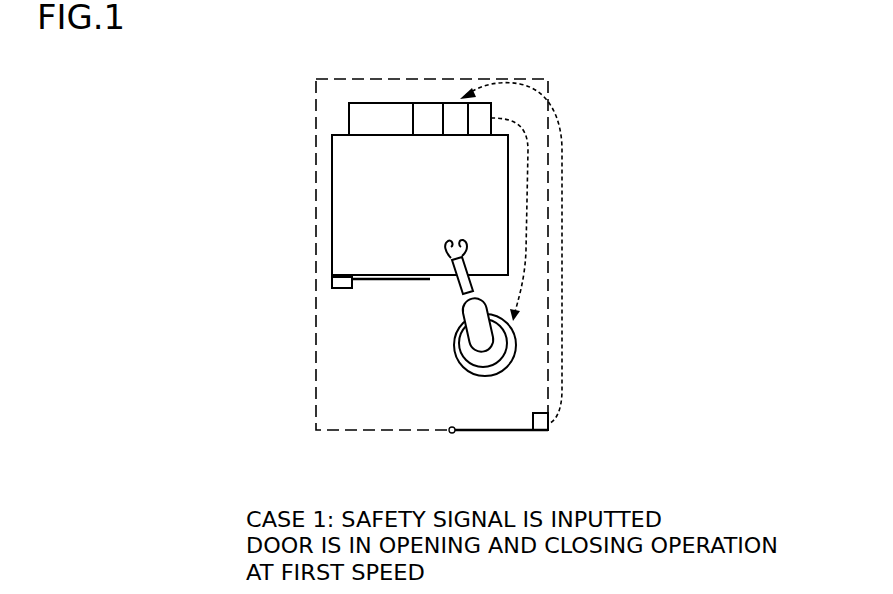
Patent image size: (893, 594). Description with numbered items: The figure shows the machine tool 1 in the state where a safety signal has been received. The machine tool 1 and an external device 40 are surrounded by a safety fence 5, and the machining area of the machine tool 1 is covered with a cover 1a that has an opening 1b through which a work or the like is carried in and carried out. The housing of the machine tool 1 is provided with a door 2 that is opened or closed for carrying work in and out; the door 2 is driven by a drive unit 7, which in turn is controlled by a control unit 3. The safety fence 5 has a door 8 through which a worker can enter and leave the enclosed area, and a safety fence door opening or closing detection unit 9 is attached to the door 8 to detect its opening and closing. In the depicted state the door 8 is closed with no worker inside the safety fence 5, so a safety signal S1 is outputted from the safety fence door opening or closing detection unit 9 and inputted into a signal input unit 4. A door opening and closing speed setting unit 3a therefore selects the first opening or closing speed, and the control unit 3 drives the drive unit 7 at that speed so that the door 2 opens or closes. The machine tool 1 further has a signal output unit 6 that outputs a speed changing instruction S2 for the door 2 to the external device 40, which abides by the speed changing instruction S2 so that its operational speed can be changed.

The machine tool 1 is at (326, 170).
The cover 1a is at (332, 218).
The opening 1b is at (452, 277).
The door 2 is at (368, 282).
The control unit 3 is at (360, 103).
The door opening and closing speed setting unit 3a is at (424, 103).
The signal input unit 4 is at (455, 103).
The safety fence 5 is at (353, 432).
The signal output unit 6 is at (478, 137).
The drive unit 7 is at (330, 282).
The door 8 is at (518, 432).
The safety fence door opening or closing detection unit 9 is at (548, 432).
The external device 40 is at (487, 377).
The safety signal S1 is at (527, 253).
The speed changing instruction S2 is at (507, 219).